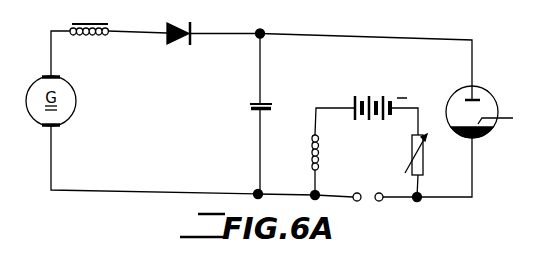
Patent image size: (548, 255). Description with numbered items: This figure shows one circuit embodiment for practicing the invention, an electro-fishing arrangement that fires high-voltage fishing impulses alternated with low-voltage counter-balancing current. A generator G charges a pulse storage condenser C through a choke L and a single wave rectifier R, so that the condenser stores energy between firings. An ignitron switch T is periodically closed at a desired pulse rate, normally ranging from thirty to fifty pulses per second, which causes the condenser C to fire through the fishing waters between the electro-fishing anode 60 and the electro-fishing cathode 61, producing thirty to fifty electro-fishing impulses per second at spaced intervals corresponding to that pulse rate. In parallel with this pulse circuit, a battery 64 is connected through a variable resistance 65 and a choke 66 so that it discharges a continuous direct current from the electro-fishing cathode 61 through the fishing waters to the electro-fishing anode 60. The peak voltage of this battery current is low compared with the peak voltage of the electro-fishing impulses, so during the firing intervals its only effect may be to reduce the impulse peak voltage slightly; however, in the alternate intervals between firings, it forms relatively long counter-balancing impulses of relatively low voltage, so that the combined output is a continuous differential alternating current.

The choke L is at (109, 38).
The single wave rectifier R is at (185, 46).
The pulse storage condenser C is at (257, 104).
The ignitron switch T is at (488, 103).
The battery 64 is at (364, 98).
The choke 66 is at (321, 152).
The electro-fishing cathode 61 is at (355, 193).
The electro-fishing anode 60 is at (382, 200).
The variable resistance 65 is at (424, 160).